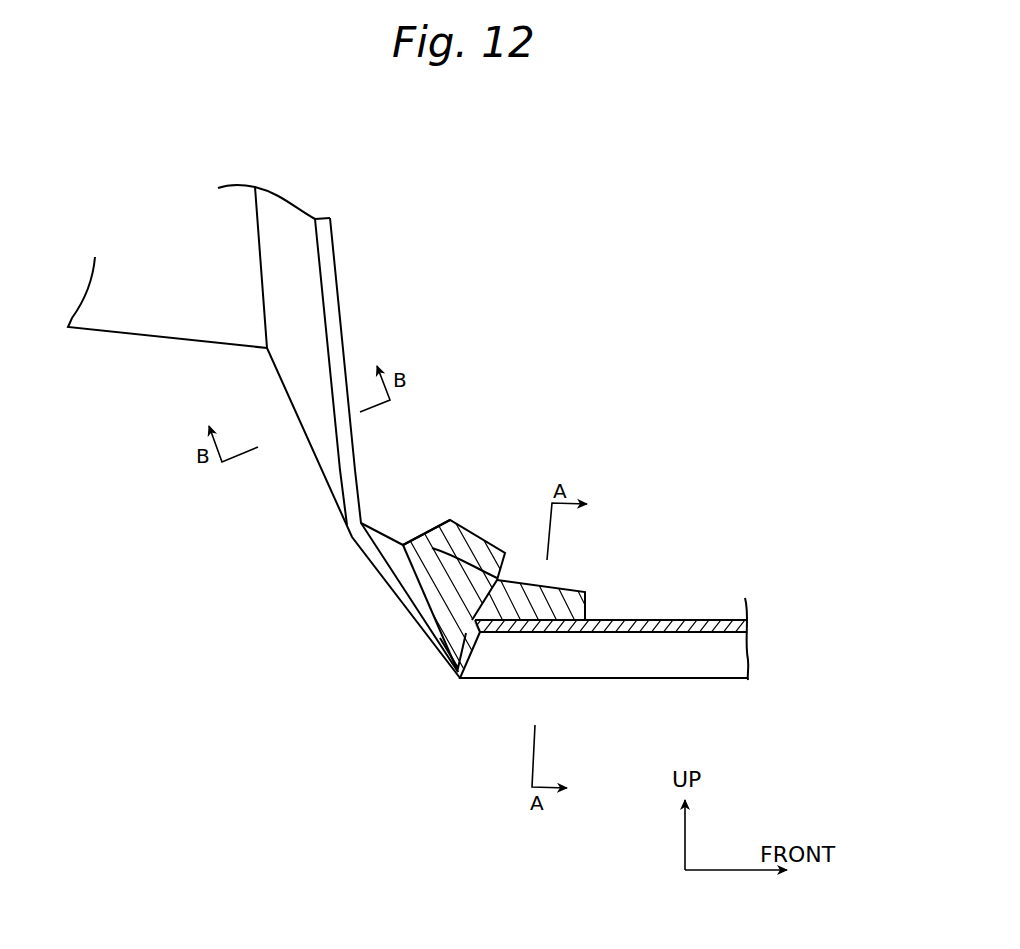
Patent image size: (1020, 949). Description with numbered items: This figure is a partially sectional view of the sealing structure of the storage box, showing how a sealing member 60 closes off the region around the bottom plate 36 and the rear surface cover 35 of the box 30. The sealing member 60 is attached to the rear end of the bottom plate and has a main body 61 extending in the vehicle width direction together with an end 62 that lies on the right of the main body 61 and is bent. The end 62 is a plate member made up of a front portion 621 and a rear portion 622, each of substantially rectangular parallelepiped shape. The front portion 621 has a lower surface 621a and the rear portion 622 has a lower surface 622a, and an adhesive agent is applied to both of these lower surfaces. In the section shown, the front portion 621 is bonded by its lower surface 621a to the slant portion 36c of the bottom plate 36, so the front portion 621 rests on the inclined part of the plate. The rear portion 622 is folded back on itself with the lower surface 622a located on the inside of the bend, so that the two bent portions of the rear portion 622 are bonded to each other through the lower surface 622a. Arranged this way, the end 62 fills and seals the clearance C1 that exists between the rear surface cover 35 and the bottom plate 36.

The floor panel 30 is at (652, 603).
The rear surface cover 35 is at (388, 583).
The bottom plate 36 is at (586, 680).
The slant portion 36c is at (613, 660).
The sealing member 60 is at (620, 360).
The main body 61 is at (385, 528).
The end 62 is at (657, 407).
The front portion 621 is at (573, 590).
The rear portion 622 is at (460, 543).
The lower surface 621a is at (520, 632).
The lower surface 622a is at (442, 597).
The clearance C1 is at (445, 676).